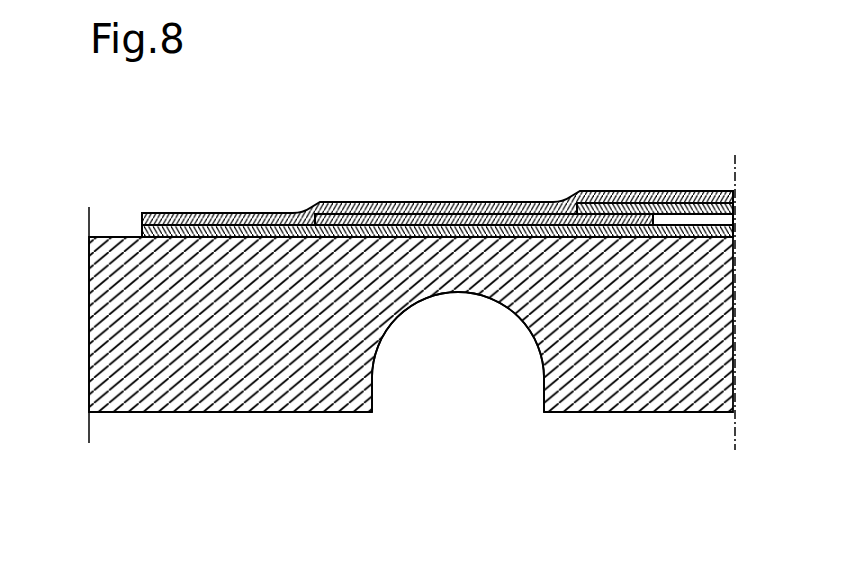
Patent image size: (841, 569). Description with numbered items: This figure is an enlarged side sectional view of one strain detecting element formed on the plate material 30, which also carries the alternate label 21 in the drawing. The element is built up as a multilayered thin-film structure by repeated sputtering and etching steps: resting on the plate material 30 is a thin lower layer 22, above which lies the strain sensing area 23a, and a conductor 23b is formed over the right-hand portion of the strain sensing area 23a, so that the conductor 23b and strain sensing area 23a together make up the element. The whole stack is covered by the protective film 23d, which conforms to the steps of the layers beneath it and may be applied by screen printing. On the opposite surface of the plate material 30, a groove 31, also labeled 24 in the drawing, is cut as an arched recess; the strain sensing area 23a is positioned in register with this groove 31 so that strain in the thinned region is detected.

The plate material 30 is at (411, 360).
The substrate 21 is at (278, 358).
The groove 31 is at (478, 387).
The opening 24 is at (450, 363).
The insulating layer 22 is at (142, 223).
The strain sensing area 23a is at (458, 202).
The conductor 23b is at (628, 192).
The protective film 23d is at (362, 199).